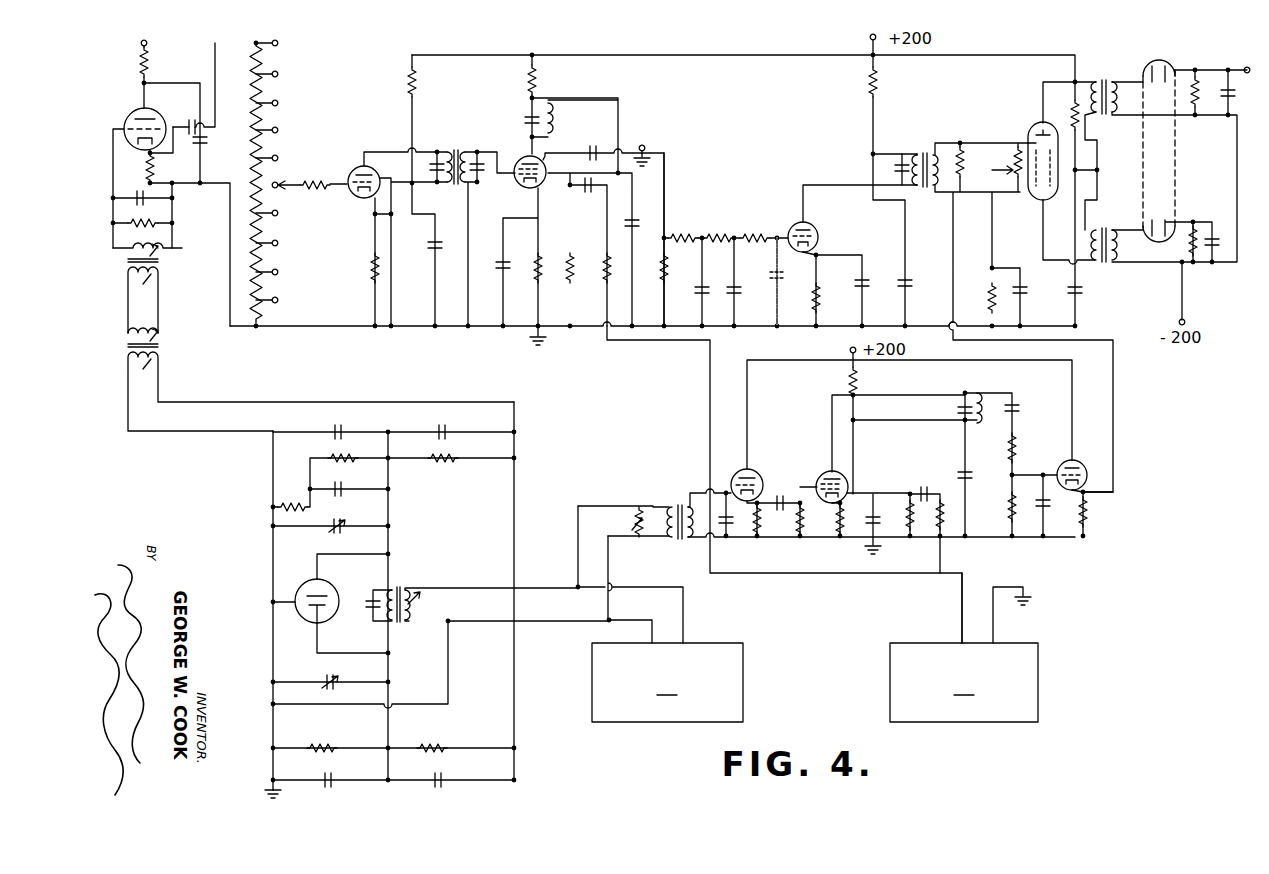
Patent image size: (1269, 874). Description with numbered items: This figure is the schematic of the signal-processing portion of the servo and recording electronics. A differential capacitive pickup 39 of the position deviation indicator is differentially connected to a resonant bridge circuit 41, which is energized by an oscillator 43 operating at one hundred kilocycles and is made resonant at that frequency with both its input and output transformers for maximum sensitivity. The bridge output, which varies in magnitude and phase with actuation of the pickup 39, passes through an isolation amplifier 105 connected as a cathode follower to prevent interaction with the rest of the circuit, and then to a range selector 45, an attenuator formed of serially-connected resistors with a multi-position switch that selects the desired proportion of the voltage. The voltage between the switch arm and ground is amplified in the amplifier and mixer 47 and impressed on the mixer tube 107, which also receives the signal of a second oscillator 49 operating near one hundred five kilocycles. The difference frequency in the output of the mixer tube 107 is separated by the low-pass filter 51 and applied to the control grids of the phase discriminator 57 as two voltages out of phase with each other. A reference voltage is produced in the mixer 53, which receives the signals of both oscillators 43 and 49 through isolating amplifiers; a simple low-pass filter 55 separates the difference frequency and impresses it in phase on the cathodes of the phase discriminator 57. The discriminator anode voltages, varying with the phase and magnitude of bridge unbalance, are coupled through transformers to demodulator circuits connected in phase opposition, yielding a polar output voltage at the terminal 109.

The capacitive pickup 39 is at (308, 581).
The bridge circuit 41 is at (422, 507).
The oscillator 43 is at (667, 682).
The range selector 45 is at (287, 226).
The amplifier and mixer 47 is at (459, 117).
The oscillator 49 is at (964, 647).
The low-pass filter 51 is at (711, 232).
The mixer 53 is at (896, 469).
The low-pass filter 55 is at (1032, 456).
The phase discriminator 57 is at (1004, 104).
The isolation amplifier 105 is at (106, 107).
The mixer tube 107 is at (525, 152).
The terminal 109 is at (1238, 63).